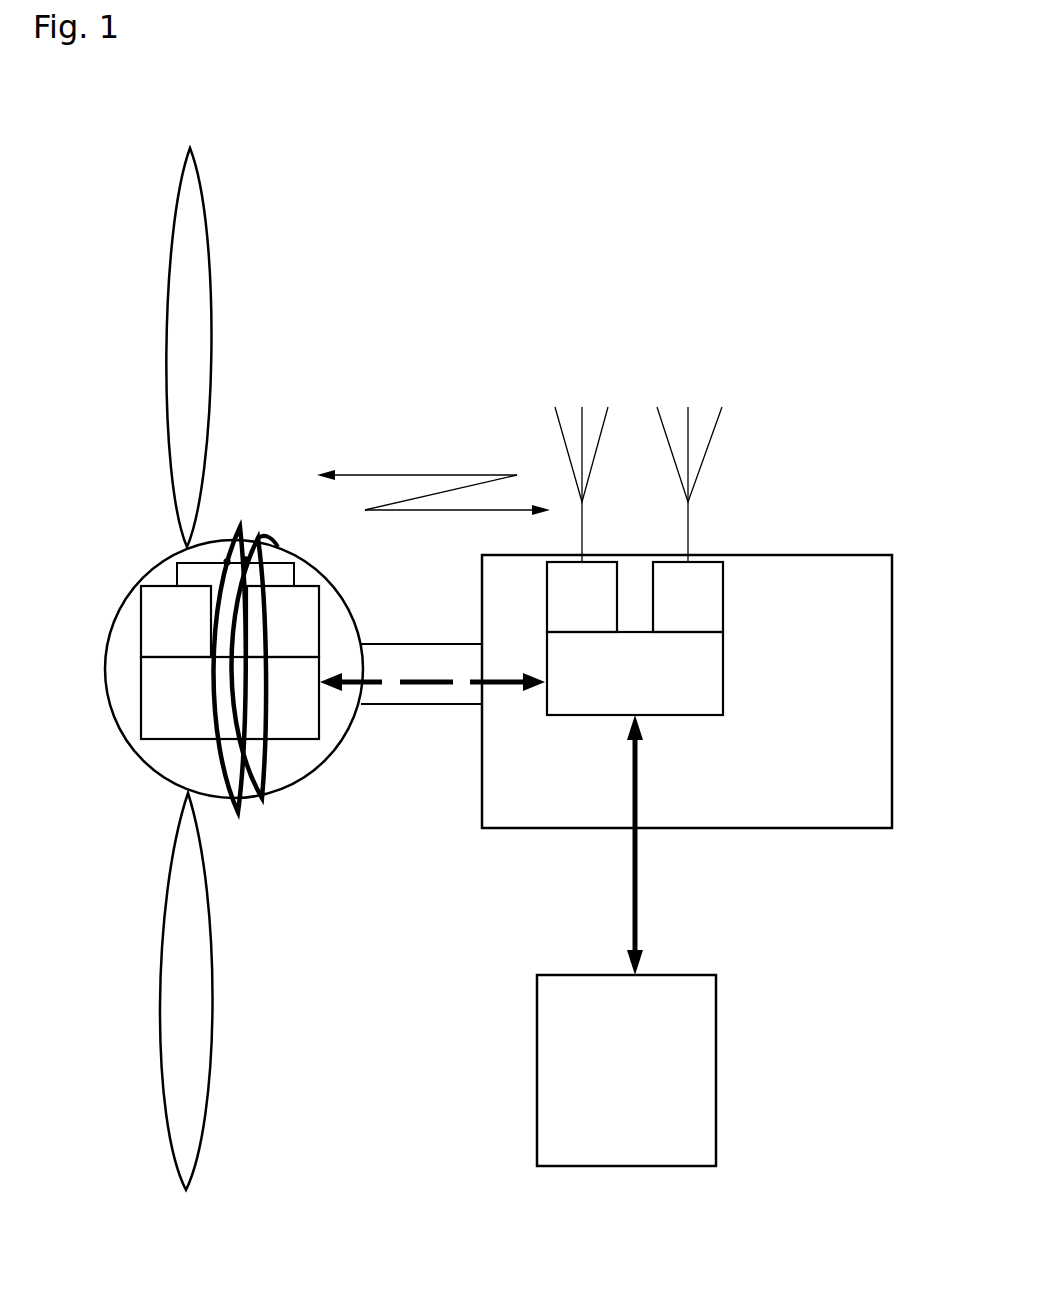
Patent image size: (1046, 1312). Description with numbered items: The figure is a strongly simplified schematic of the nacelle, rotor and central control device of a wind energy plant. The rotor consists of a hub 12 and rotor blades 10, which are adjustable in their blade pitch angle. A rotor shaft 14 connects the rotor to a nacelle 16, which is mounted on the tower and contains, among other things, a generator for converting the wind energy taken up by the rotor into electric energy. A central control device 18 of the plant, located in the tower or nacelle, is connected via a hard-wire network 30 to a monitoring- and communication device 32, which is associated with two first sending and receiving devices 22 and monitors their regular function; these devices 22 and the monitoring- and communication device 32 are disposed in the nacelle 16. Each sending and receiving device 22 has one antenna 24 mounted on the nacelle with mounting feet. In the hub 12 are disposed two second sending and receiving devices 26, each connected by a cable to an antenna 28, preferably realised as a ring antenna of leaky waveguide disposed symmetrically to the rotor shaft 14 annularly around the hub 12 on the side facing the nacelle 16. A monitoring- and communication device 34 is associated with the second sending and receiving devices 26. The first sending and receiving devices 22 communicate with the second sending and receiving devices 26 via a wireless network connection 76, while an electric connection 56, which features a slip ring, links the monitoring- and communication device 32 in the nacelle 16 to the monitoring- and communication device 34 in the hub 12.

The rotor blades 10 is at (178, 348).
The hub 12 is at (128, 727).
The rotor shaft 14 is at (412, 658).
The nacelle 16 is at (687, 691).
The central control device 18 is at (626, 1070).
The first sending and receiving devices 22 is at (635, 597).
The antenna 24 is at (708, 402).
The second sending and receiving devices 26 is at (230, 610).
The antennas 28 is at (258, 537).
The hard-wire network 30 is at (631, 875).
The monitoring- and communication device 32 is at (635, 673).
The monitoring- and communication device 34 is at (230, 698).
The electric connection 56 is at (458, 680).
The wireless network connection 76 is at (433, 475).